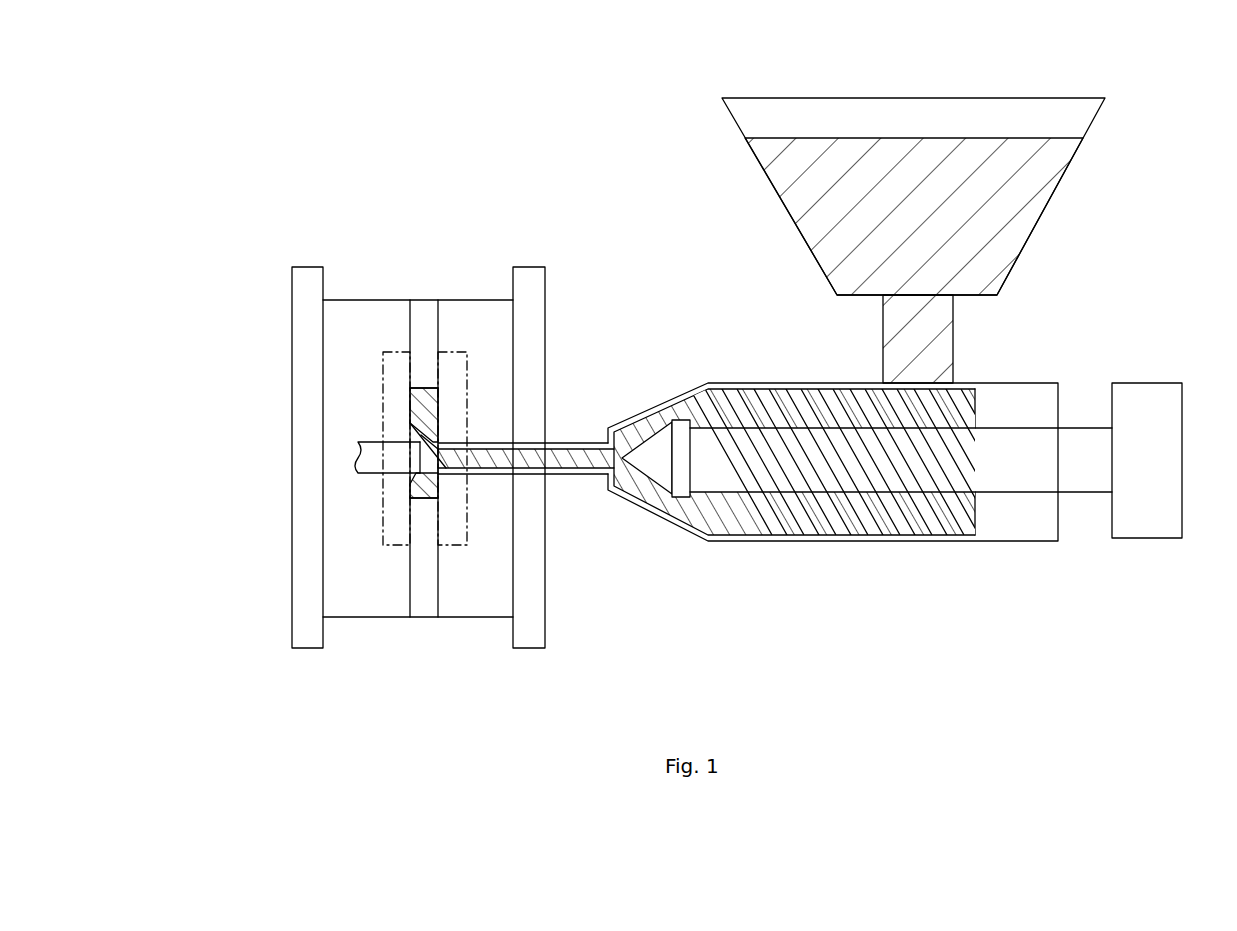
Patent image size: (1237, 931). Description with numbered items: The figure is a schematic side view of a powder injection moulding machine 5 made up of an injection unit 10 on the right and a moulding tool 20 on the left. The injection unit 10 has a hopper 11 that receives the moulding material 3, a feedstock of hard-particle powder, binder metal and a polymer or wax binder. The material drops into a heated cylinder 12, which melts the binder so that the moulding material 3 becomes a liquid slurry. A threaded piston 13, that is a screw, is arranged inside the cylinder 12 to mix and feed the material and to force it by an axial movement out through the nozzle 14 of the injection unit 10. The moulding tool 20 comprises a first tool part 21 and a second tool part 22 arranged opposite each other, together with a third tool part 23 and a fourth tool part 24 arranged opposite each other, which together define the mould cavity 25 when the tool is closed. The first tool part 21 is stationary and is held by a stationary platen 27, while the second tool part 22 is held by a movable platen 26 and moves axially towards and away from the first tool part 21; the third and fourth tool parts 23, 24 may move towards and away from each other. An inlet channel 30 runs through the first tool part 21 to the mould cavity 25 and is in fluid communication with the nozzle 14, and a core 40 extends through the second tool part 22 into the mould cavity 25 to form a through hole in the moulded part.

The powder injection moulding machine 5 is at (651, 208).
The injection unit 10 is at (1048, 331).
The hopper 11 is at (1066, 183).
The moulding material 3 is at (993, 237).
The heated cylinder 12 is at (990, 542).
The threaded piston 13 is at (859, 475).
The nozzle 14 is at (566, 436).
The moulding tool 20 is at (585, 573).
The first tool part 21 is at (464, 318).
The second tool part 22 is at (363, 321).
The third tool part 23 is at (424, 318).
The fourth tool part 24 is at (424, 595).
The mould cavity 25 is at (428, 406).
The movable platen 26 is at (304, 605).
The stationary platen 27 is at (530, 606).
The inlet channel 30 is at (452, 460).
The core 40 is at (368, 455).